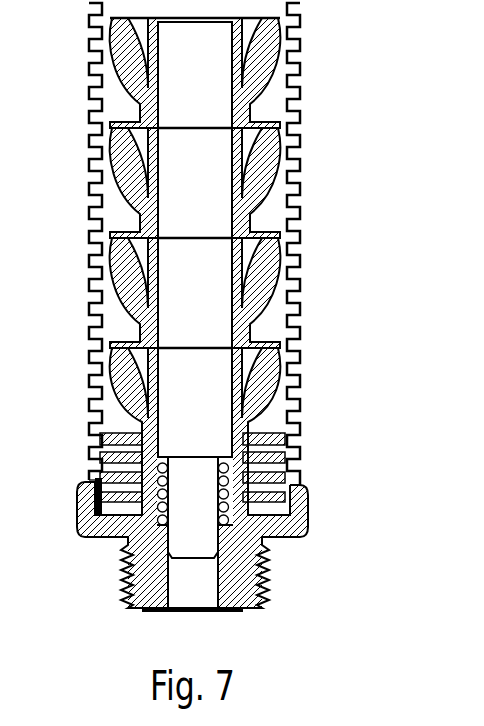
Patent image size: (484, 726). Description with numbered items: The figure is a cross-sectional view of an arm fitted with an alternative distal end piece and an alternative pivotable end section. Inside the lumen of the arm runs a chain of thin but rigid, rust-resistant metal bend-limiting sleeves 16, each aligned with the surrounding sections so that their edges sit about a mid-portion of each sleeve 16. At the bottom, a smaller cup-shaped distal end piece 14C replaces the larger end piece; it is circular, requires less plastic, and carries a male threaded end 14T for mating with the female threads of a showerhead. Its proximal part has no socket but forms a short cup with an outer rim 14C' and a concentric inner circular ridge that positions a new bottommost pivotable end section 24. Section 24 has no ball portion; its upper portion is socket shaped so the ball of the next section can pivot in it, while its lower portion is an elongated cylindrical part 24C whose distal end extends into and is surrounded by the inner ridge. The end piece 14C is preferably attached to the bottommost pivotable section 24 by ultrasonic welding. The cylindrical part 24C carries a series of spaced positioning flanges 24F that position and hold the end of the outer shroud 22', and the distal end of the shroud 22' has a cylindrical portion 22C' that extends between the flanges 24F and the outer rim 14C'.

The bend-limiting sleeve 16 is at (222, 67).
The outer shroud 22' is at (220, 244).
The cylindrical portion of the shroud distal end 22C' is at (62, 497).
The bottommost pivotable end section 24 is at (283, 354).
The positioning flanges 24F is at (296, 438).
The elongated cylindrical part 24C is at (142, 445).
The cup-shaped distal end piece 14C is at (227, 532).
The outer rim 14C' is at (224, 509).
The male threaded end 14T is at (122, 574).